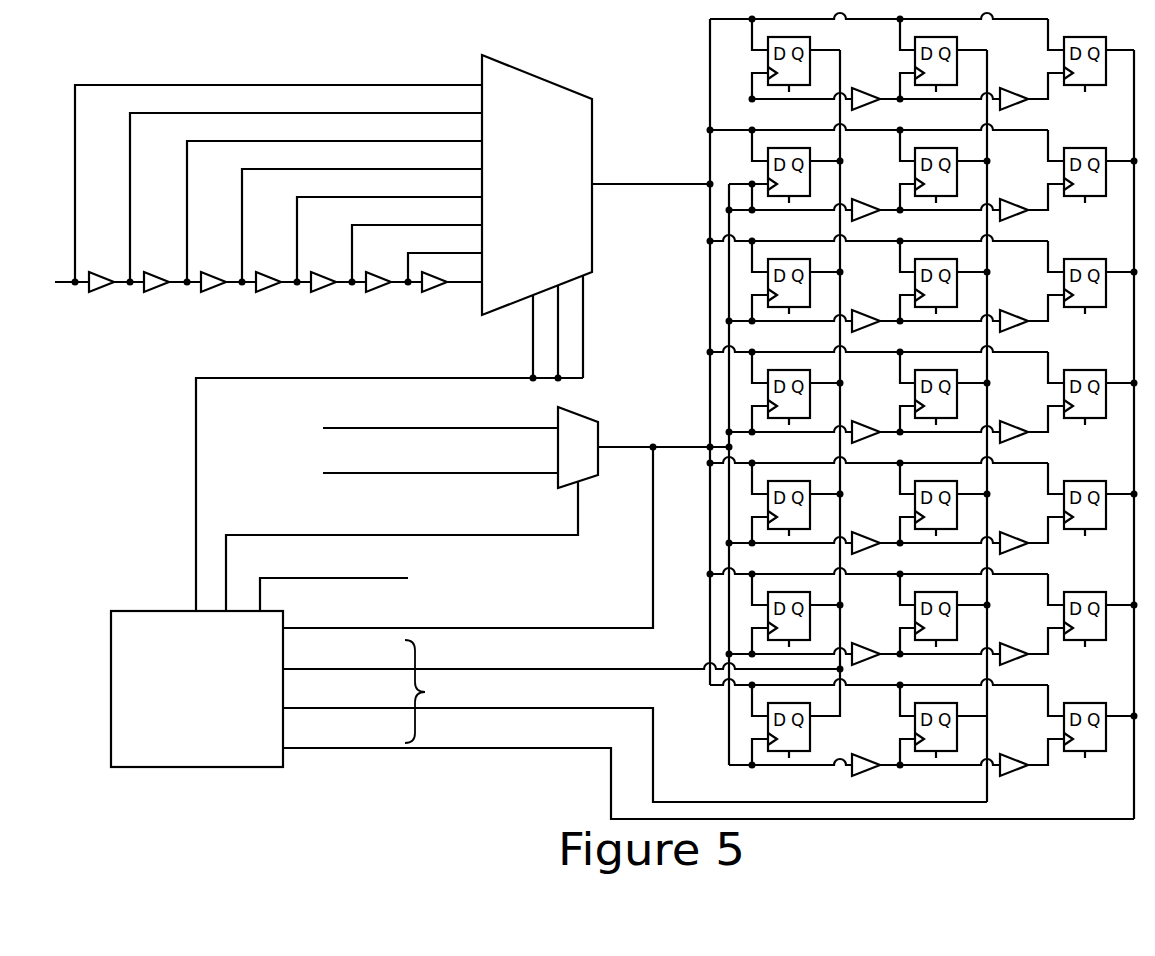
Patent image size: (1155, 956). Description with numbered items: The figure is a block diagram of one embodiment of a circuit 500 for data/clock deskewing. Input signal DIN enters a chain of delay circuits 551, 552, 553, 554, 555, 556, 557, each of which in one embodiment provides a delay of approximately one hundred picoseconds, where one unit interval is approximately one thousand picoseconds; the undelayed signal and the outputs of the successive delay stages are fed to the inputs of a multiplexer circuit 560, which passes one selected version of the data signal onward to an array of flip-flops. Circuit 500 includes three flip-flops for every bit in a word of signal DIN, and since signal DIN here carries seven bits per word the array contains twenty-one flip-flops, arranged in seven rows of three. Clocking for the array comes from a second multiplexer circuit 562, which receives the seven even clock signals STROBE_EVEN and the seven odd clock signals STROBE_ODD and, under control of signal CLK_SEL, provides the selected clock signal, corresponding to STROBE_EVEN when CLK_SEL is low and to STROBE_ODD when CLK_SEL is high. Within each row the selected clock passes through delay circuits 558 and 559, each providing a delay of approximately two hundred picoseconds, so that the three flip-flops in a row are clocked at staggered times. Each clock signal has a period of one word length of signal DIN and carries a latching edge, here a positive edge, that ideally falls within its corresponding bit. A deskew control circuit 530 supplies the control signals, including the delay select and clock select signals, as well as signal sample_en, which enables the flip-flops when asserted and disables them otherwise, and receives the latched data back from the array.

The circuit 500 is at (658, 36).
The deskew control circuit 530 is at (179, 651).
The delay circuit 551 is at (108, 286).
The delay circuit 552 is at (163, 286).
The delay circuit 553 is at (220, 286).
The delay circuit 554 is at (275, 286).
The delay circuit 555 is at (330, 286).
The delay circuit 556 is at (385, 286).
The delay circuit 557 is at (441, 286).
The delay circuit 558 is at (864, 106).
The delay circuit 559 is at (1012, 106).
The multiplexer circuit 560 is at (567, 192).
The multiplexer circuit 562 is at (596, 461).